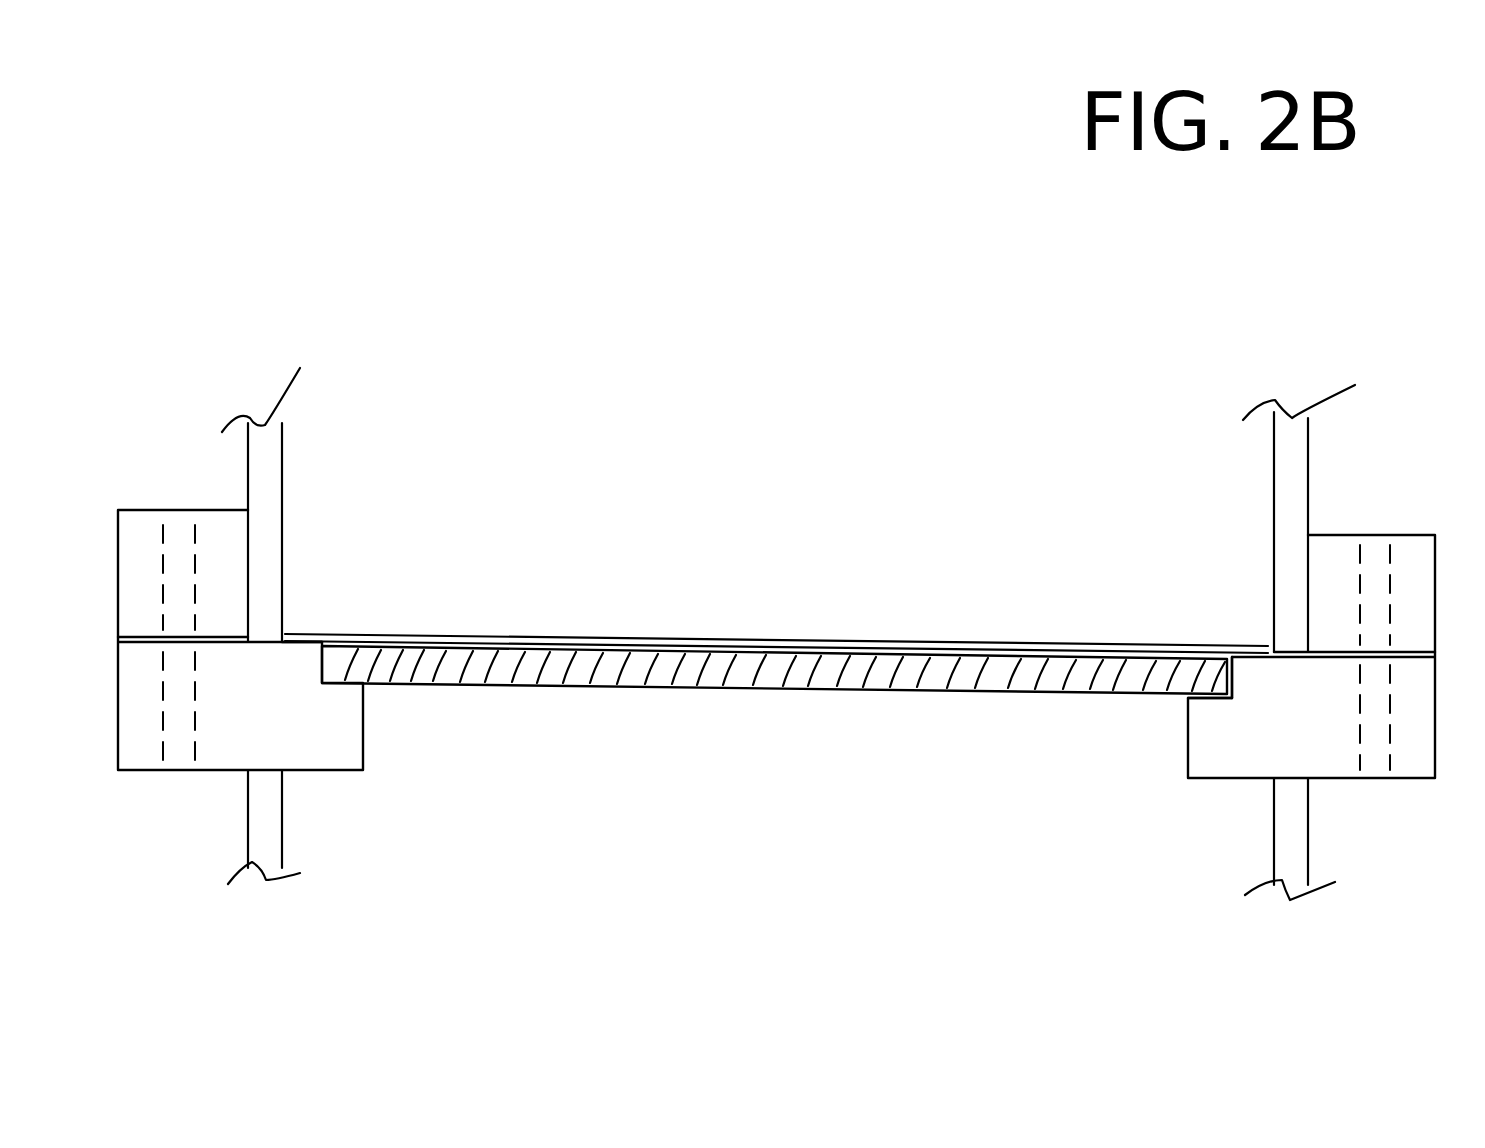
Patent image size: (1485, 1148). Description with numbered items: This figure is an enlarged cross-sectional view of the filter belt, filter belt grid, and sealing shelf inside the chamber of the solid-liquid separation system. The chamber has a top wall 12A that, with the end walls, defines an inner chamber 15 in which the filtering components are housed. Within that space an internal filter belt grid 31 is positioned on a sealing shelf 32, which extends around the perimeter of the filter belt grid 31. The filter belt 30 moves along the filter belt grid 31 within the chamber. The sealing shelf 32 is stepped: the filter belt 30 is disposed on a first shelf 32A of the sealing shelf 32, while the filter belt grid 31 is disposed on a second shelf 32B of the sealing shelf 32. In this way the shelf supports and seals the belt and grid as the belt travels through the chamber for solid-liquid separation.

The top wall 12A is at (1288, 487).
The inner chamber 15 is at (783, 473).
The filter belt 30 is at (907, 643).
The filter belt grid 31 is at (962, 677).
The sealing shelf 32 is at (228, 747).
The first shelf 32A is at (1257, 663).
The second shelf 32B is at (1210, 698).